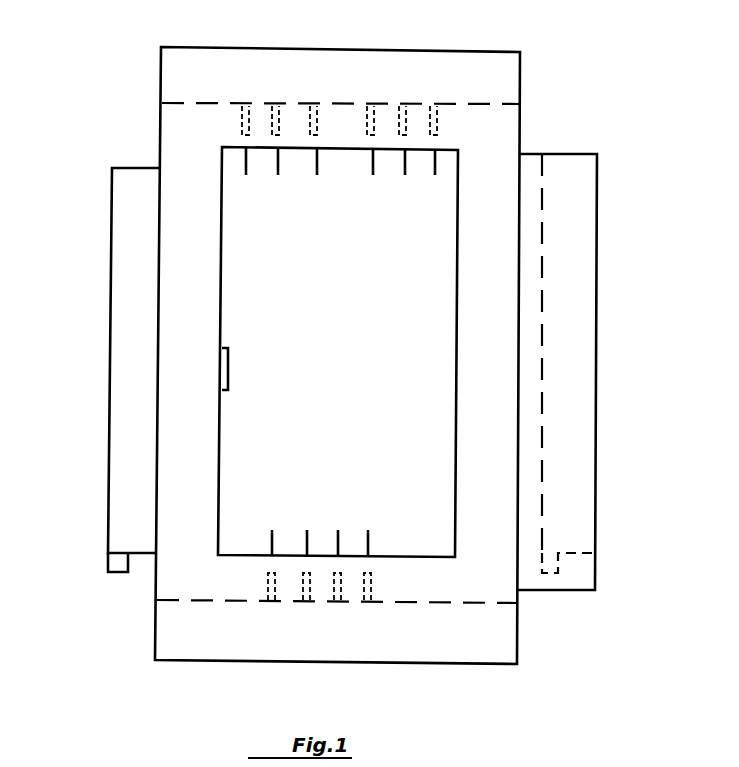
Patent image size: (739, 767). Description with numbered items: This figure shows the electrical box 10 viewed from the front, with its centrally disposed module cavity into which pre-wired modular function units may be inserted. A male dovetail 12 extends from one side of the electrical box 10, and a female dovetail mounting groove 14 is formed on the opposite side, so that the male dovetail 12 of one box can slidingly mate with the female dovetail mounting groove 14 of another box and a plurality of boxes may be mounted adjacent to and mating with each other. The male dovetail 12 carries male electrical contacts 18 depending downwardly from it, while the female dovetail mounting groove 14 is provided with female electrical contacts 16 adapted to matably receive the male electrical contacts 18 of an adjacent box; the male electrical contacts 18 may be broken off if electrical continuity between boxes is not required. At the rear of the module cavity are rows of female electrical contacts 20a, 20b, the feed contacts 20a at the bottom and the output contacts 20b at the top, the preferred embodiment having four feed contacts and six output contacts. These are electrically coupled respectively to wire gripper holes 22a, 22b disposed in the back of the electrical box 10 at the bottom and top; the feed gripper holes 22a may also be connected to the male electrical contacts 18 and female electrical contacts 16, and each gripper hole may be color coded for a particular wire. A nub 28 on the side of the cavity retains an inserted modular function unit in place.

The electrical box 10 is at (618, 78).
The male dovetail 12 is at (132, 178).
The female dovetail mounting groove 14 is at (585, 178).
The female electrical contacts 16 is at (558, 567).
The male electrical contacts 18 is at (118, 563).
The female electrical contacts 20a is at (273, 530).
The female electrical contacts 20b is at (278, 166).
The wire gripper holes 22a is at (272, 600).
The wire gripper holes 22b is at (245, 103).
The nub 28 is at (228, 350).